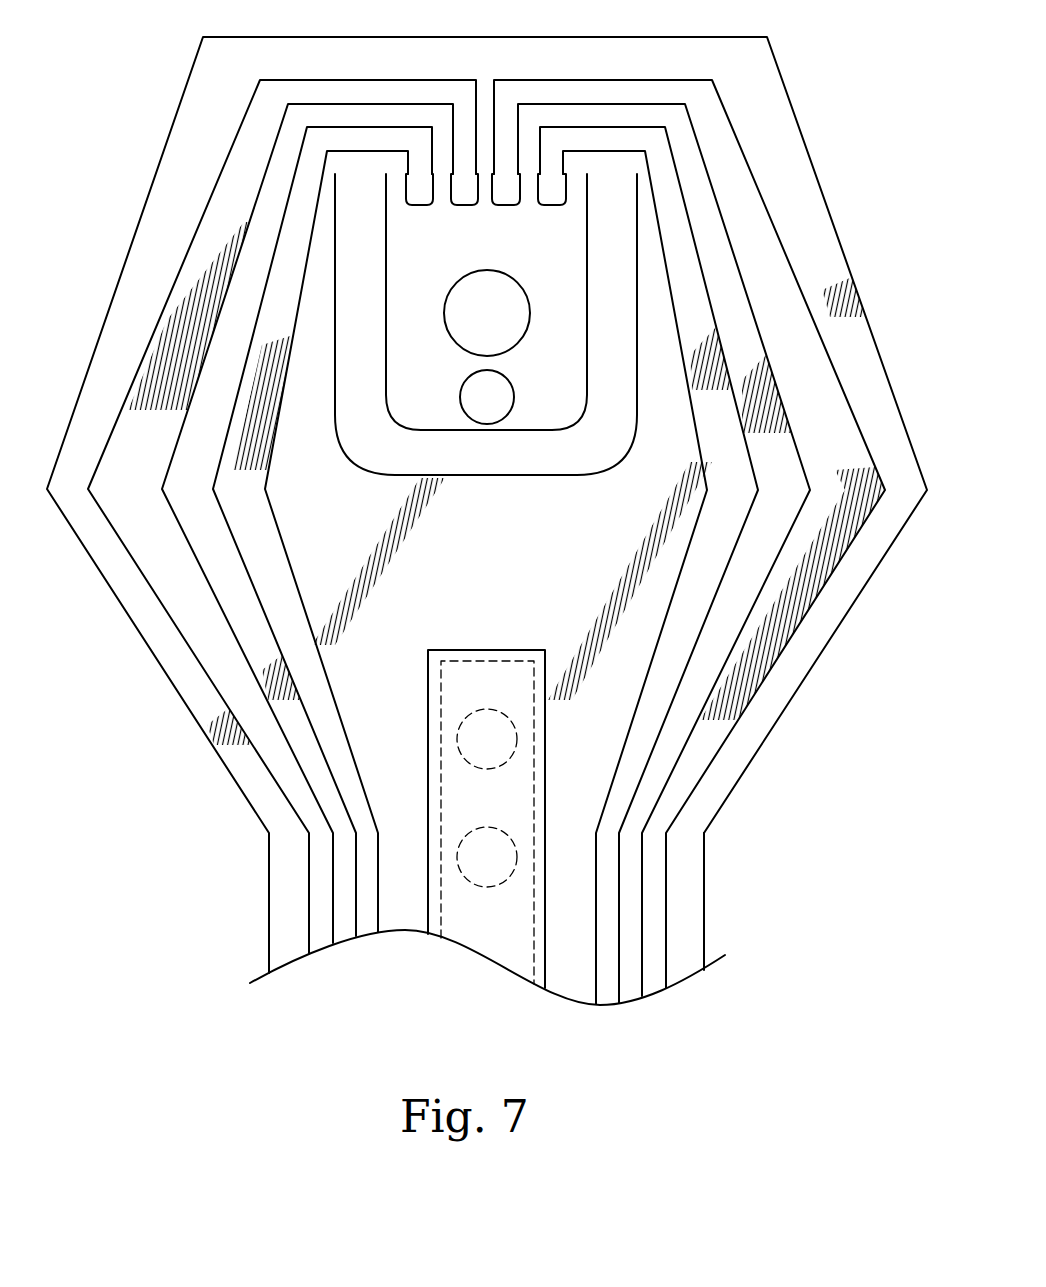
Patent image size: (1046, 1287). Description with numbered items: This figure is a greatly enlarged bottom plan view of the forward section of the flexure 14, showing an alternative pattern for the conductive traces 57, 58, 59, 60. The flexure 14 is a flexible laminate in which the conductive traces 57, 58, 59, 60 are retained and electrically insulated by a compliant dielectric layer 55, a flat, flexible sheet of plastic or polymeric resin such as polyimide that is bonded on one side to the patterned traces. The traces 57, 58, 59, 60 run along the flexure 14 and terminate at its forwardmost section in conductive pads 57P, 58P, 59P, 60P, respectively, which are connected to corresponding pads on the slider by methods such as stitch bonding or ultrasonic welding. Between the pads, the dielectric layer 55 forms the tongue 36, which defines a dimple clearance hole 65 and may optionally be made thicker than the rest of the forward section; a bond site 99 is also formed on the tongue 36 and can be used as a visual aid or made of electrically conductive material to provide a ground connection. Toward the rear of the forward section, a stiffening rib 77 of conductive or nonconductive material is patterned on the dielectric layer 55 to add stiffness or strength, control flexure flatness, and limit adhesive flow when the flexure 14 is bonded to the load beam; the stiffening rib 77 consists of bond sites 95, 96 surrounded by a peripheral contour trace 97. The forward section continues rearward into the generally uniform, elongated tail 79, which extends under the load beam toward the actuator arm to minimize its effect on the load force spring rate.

The flexure 14 is at (802, 138).
The tongue 36 is at (438, 378).
The dielectric layer 55 is at (402, 922).
The conductive trace 57 is at (748, 221).
The conductive trace 58 is at (715, 441).
The conductive trace 59 is at (267, 540).
The conductive trace 60 is at (270, 743).
The conductive pad 57P is at (508, 205).
The conductive pad 58P is at (552, 205).
The conductive pad 59P is at (418, 205).
The conductive pad 60P is at (462, 205).
The dimple clearance hole 65 is at (520, 315).
The bond site 99 is at (500, 395).
The peripheral contour trace 97 is at (488, 656).
The bond site 95 is at (505, 740).
The bond site 96 is at (500, 848).
The stiffening rib 77 is at (484, 952).
The tail 79 is at (690, 906).